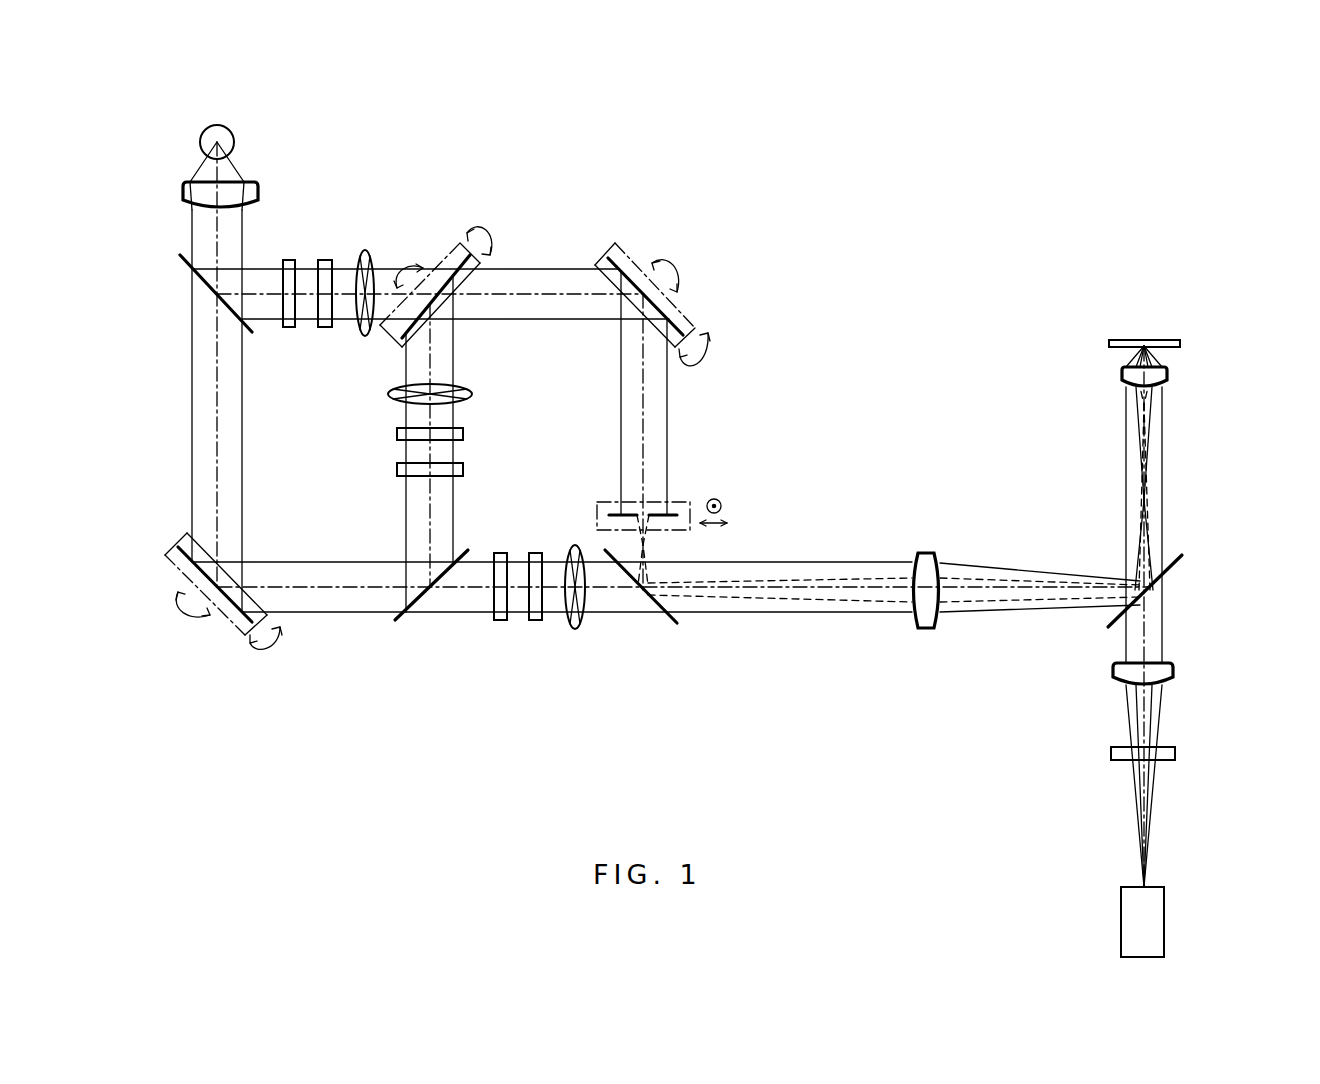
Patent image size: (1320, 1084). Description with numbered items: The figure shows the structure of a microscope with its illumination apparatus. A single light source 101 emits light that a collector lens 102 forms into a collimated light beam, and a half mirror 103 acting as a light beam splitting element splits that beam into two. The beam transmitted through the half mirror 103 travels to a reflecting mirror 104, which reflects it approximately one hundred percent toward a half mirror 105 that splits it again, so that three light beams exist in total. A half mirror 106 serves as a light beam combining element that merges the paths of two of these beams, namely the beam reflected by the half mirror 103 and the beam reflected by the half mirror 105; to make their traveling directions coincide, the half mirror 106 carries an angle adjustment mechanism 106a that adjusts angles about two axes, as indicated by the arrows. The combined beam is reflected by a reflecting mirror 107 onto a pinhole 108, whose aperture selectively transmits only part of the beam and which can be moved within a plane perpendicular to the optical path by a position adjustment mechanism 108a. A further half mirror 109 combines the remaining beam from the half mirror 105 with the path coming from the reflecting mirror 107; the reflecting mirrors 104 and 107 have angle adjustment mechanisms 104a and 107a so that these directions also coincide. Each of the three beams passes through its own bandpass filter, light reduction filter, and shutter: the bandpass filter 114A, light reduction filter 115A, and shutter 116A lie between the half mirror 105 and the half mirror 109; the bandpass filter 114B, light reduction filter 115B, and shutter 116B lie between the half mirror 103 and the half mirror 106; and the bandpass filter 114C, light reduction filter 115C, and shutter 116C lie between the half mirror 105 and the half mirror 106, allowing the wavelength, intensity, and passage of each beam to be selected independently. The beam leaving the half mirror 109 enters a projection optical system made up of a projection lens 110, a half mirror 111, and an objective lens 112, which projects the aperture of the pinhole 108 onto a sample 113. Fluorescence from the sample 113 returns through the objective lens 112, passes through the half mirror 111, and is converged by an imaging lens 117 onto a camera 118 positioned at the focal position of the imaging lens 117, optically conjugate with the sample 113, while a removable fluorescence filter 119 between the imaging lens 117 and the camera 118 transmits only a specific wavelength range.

The light source 101 is at (200, 143).
The collector lens 102 is at (183, 196).
The half mirror 103 is at (183, 264).
The reflecting mirror 104 is at (182, 560).
The angle adjustment mechanism 104a is at (228, 625).
The half mirror 105 is at (398, 625).
The half mirror 106 is at (452, 257).
The angle adjustment mechanism 106a is at (462, 239).
The reflecting mirror 107 is at (632, 268).
The angle adjustment mechanism 107a is at (690, 320).
The pinhole 108 is at (672, 512).
The position adjustment mechanism 108a is at (600, 502).
The half mirror 109 is at (672, 626).
The projection lens 110 is at (928, 631).
The half mirror 111 is at (1183, 558).
The objective lens 112 is at (1168, 378).
The sample 113 is at (1182, 344).
The bandpass filter 114A is at (502, 622).
The bandpass filter 114B is at (289, 259).
The bandpass filter 114C is at (397, 470).
The light reduction filter 115A is at (535, 622).
The light reduction filter 115B is at (326, 257).
The light reduction filter 115C is at (397, 434).
The shutter 116A is at (583, 628).
The shutter 116B is at (369, 251).
The shutter 116C is at (390, 394).
The imaging lens 117 is at (1174, 673).
The camera 118 is at (1165, 924).
The fluorescence filter 119 is at (1176, 753).